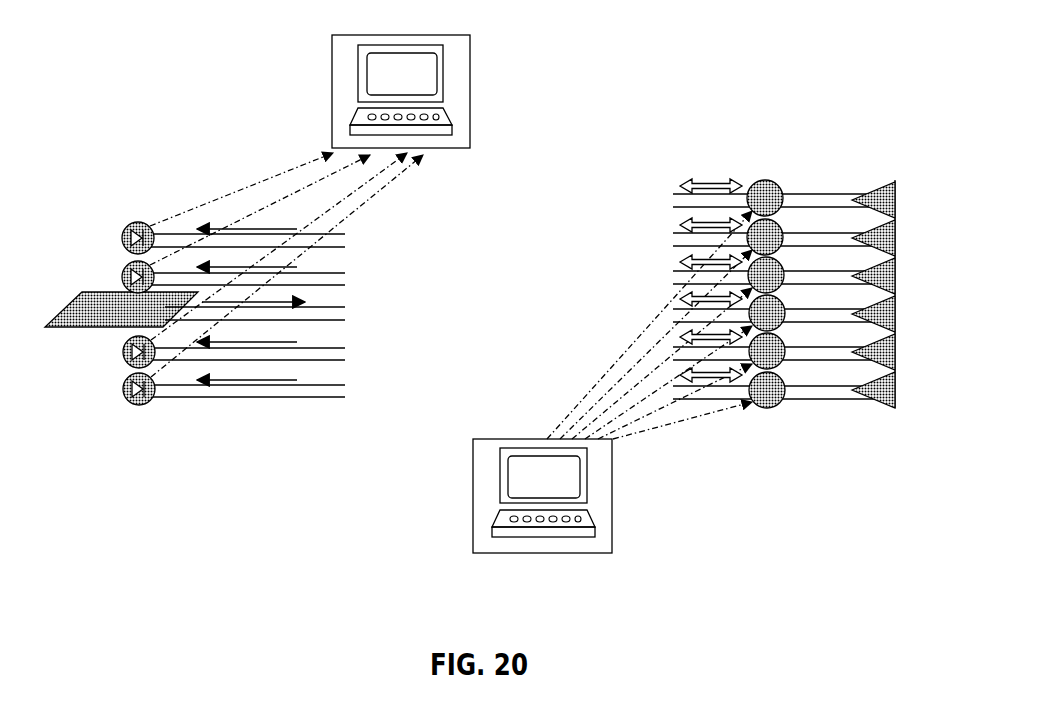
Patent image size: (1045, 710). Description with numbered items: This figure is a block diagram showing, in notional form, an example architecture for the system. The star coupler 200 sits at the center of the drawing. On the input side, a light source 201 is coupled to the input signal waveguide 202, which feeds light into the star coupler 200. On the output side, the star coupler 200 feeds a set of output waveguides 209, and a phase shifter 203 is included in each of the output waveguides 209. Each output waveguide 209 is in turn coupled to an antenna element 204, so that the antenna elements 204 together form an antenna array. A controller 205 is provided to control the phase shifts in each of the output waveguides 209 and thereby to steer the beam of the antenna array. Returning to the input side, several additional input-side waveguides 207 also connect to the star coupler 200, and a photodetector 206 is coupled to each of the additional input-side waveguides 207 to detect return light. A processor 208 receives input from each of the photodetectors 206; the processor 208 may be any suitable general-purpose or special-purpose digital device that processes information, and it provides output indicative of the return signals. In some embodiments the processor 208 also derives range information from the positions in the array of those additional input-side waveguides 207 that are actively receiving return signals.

The star coupler 200 is at (505, 345).
The light source 201 is at (157, 330).
The input signal waveguide 202 is at (268, 330).
The phase shifter 203 is at (780, 363).
The antenna element 204 is at (897, 203).
The controller 205 is at (612, 497).
The photodetector 206 is at (123, 233).
The additional input-side waveguide 207 is at (258, 400).
The processor 208 is at (332, 63).
The output waveguide 209 is at (767, 180).